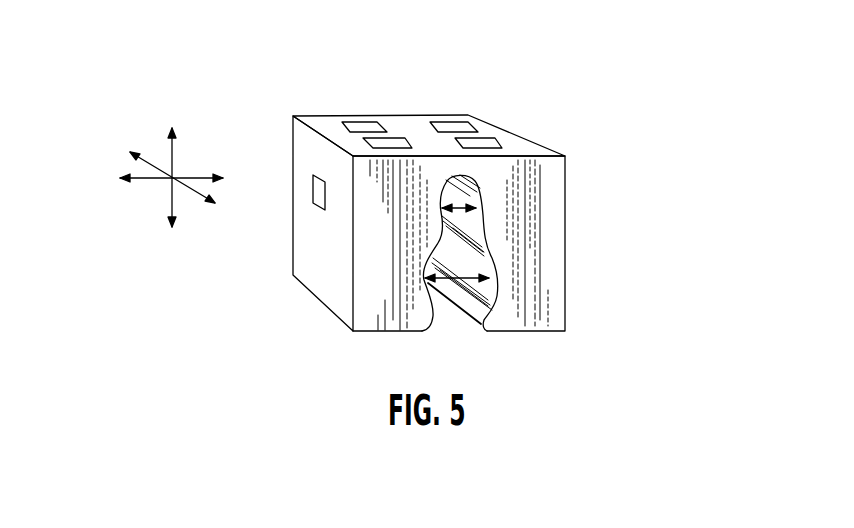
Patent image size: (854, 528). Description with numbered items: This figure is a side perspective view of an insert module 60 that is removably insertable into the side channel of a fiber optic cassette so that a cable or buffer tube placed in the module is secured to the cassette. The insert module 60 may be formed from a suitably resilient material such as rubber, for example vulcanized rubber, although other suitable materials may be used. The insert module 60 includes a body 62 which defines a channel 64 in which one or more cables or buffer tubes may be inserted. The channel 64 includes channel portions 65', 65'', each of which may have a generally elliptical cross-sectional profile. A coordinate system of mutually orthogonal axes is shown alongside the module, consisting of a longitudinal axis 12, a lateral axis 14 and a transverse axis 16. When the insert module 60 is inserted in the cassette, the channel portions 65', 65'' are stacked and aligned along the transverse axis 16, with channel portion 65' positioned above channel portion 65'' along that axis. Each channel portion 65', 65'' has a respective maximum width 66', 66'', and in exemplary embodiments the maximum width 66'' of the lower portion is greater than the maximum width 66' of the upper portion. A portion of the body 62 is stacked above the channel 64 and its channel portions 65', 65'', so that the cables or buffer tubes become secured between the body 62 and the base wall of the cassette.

The longitudinal axis 12 is at (135, 158).
The lateral axis 14 is at (193, 172).
The transverse axis 16 is at (168, 143).
The insert module 60 is at (622, 137).
The body 62 is at (522, 148).
The channel 64 is at (464, 345).
The channel portion 65' is at (548, 194).
The channel portion 65'' is at (571, 280).
The maximum width 66' is at (405, 134).
The maximum width 66'' is at (424, 257).